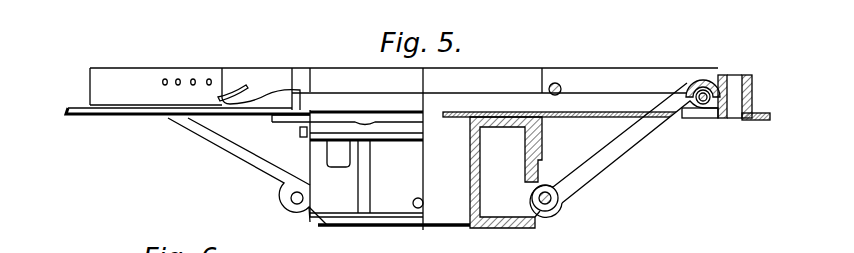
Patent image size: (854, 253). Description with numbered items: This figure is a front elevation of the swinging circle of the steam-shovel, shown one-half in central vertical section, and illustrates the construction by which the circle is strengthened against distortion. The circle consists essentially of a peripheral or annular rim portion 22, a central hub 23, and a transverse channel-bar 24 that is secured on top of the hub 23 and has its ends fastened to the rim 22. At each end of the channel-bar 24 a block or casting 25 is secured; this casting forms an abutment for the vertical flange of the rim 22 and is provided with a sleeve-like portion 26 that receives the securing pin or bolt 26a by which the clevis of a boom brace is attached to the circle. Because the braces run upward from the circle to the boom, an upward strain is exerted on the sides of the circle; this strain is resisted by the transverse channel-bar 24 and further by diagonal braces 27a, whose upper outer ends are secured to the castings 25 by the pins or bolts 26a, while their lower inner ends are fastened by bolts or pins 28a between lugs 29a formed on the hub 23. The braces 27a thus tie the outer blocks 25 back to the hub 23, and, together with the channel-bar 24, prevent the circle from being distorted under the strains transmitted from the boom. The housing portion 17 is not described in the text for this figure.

The housing 17 is at (598, 70).
The peripheral or rim portion 22 is at (92, 89).
The central hub 23 is at (538, 167).
The transverse channel-bar 24 is at (640, 91).
The block or casting 25 is at (702, 79).
The sleeve-like portion 26 is at (757, 88).
The securing pin or bolt 26a is at (735, 80).
The braces 27a is at (648, 150).
The bolts or pins 28a is at (563, 225).
The lugs 29a is at (295, 216).